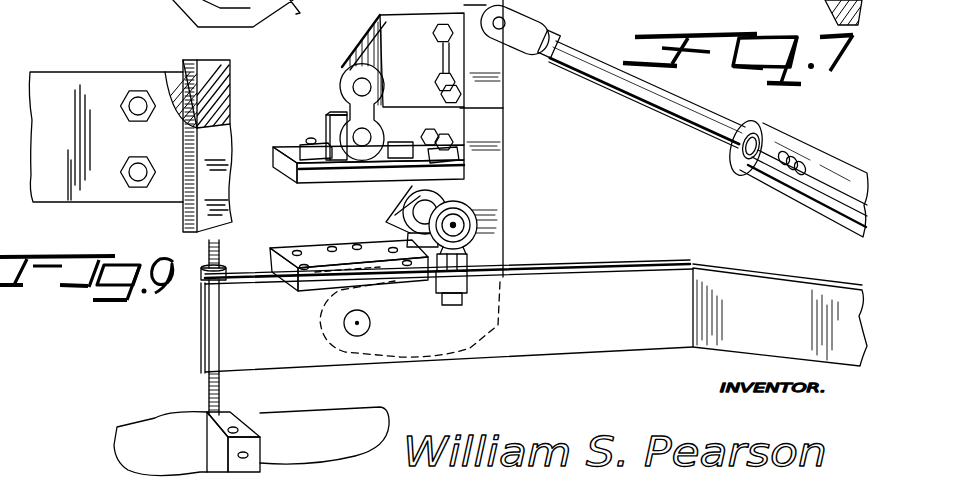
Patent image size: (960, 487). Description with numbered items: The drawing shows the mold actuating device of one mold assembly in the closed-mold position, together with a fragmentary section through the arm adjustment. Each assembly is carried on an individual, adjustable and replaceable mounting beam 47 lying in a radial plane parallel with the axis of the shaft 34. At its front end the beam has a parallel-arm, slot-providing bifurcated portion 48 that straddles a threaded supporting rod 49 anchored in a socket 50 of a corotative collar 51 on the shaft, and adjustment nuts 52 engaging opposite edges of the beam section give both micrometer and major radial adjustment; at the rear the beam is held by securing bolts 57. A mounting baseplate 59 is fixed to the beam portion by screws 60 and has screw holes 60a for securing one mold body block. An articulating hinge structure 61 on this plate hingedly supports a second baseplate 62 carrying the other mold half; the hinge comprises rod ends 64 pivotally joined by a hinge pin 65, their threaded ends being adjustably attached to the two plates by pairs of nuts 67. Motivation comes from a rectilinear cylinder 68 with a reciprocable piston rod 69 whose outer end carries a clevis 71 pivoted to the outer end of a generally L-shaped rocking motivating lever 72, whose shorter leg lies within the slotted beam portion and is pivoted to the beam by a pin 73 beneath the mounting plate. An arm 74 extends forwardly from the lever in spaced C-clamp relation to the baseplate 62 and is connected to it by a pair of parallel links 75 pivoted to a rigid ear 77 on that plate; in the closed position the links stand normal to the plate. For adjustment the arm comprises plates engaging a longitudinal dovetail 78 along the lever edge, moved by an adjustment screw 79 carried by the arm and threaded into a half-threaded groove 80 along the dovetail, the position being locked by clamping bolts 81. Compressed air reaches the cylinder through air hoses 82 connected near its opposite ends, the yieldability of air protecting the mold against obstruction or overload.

In FIG. 7, the shaft 34 is at (345, 418).
In FIG. 7, the mounting beam 47 is at (778, 329).
In FIG. 9, the bifurcated portion 48 is at (43, 10).
In FIG. 7, the bifurcated portion 48 is at (623, 236).
In FIG. 7, the threaded supporting rod 49 is at (205, 383).
In FIG. 7, the socket 50 is at (243, 452).
In FIG. 7, the corotative collar 51 is at (210, 448).
In FIG. 7, the adjustment nuts 52 is at (203, 370).
In FIG. 7, the securing bolts 57 is at (827, 15).
In FIG. 7, the mounting baseplate 59 is at (303, 293).
In FIG. 7, the screws 60 is at (293, 253).
In FIG. 7, the screw holes 60a is at (322, 246).
In FIG. 7, the articulating hinge structure 61 is at (378, 207).
In FIG. 7, the baseplate 62 is at (295, 127).
In FIG. 7, the rod ends 64 is at (410, 207).
In FIG. 7, the hinge pin 65 is at (457, 225).
In FIG. 7, the nuts 67 is at (458, 150).
In FIG. 7, the cylinder 68 is at (790, 147).
In FIG. 7, the piston rod 69 is at (700, 126).
In FIG. 7, the clevis 71 is at (518, 37).
In FIG. 9, the rocking motivating lever 72 is at (217, 143).
In FIG. 7, the rocking motivating lever 72 is at (492, 163).
In FIG. 7, the pin 73 is at (360, 323).
In FIG. 9, the arm 74 is at (97, 80).
In FIG. 7, the arm 74 is at (423, 49).
In FIG. 7, the parallel links 75 is at (355, 82).
In FIG. 7, the rigid ear 77 is at (325, 115).
In FIG. 9, the dovetail 78 is at (183, 220).
In FIG. 7, the dovetail 78 is at (462, 126).
In FIG. 9, the adjustment screw 79 is at (183, 70).
In FIG. 9, the half-threaded groove 80 is at (183, 62).
In FIG. 9, the bolts 81 is at (138, 122).
In FIG. 7, the bolts 81 is at (442, 44).
In FIG. 7, the air hoses 82 is at (807, 167).